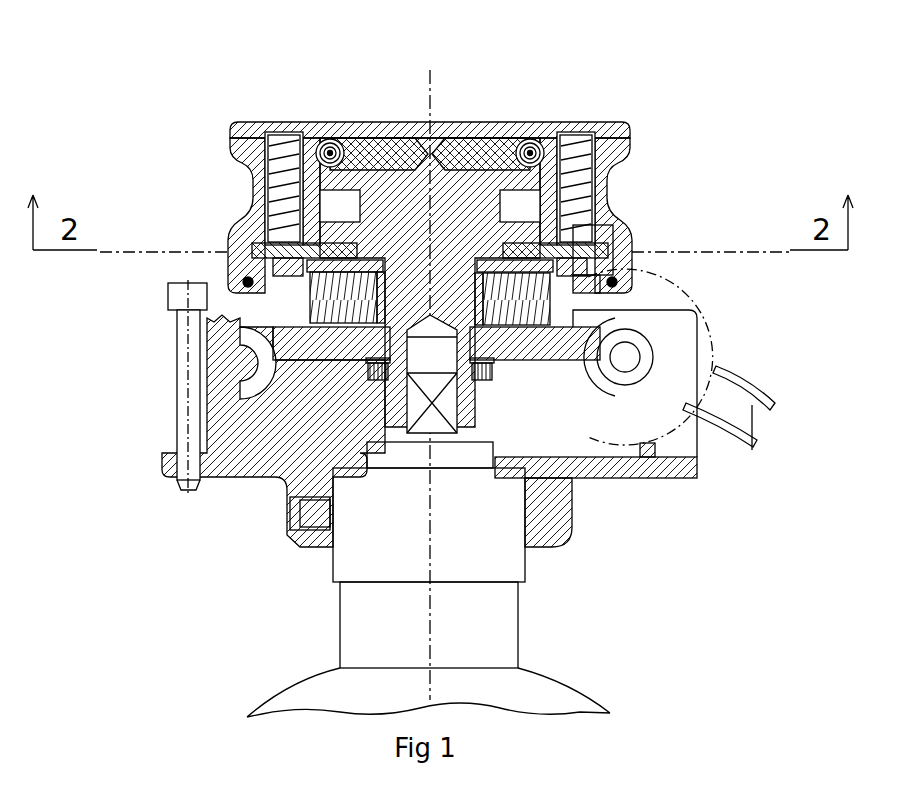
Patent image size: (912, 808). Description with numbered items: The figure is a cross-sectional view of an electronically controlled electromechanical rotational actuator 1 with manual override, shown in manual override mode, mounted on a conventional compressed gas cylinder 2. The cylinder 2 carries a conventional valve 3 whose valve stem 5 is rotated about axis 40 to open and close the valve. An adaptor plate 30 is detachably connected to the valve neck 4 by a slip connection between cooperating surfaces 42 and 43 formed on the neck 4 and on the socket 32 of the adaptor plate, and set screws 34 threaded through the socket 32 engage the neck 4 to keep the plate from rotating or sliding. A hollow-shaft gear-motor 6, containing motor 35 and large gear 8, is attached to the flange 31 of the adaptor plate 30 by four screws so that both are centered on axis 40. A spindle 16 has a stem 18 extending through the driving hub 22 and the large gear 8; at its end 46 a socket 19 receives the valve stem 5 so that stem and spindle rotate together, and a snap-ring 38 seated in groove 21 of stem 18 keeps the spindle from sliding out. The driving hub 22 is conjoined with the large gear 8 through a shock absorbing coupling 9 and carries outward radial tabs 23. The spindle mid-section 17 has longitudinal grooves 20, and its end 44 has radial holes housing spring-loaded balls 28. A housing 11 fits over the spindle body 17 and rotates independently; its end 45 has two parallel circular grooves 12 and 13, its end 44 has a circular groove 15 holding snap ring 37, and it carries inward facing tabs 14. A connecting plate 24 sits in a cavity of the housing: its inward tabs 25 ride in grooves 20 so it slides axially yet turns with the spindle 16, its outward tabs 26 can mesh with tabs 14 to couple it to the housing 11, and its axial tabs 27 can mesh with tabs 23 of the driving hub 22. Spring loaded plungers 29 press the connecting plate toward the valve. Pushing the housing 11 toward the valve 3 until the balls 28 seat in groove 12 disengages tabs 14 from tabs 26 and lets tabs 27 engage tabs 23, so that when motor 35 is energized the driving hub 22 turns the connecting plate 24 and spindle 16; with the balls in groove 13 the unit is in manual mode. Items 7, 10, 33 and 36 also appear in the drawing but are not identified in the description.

The rotational actuator 1 is at (240, 116).
The compressed gas cylinder 2 is at (285, 708).
The valve 3 is at (380, 648).
The valve neck 4 is at (510, 467).
The valve stem 5 is at (430, 425).
The hollow-shaft gear-motor 6 is at (372, 389).
The support plate 7 is at (323, 343).
The large gear 8 is at (297, 417).
The shock absorbing coupling 9 is at (345, 297).
The flange segments 10 is at (752, 400).
The housing 11 is at (257, 130).
The groove 12 is at (320, 145).
The circular groove 13 is at (540, 140).
The inward facing tabs 14 is at (567, 270).
The circular groove 15 is at (603, 270).
The spindle 16 is at (377, 132).
The spindle mid-section 17 is at (447, 217).
The spindle stem 18 is at (585, 482).
The socket 19 is at (568, 468).
The longitudinal grooves 20 is at (262, 135).
The groove 21 is at (398, 393).
The driving hub 22 is at (570, 287).
The radial tabs 23 is at (548, 265).
The connecting plate 24 is at (262, 215).
The radial inward facing tabs 25 is at (285, 168).
The outward facing radial tabs 26 is at (263, 250).
The axial tabs 27 is at (348, 250).
The spring-loaded balls 28 is at (532, 153).
The spring loaded plungers 29 is at (577, 170).
The adaptor plate 30 is at (687, 468).
The flange 31 is at (725, 432).
The socket 32 is at (547, 510).
The bolt 33 is at (181, 295).
The set screws 34 is at (313, 500).
The motor 35 is at (657, 300).
The boss 36 is at (625, 357).
The snap ring 37 is at (248, 282).
The snap-ring 38 is at (384, 378).
The axis 40 is at (432, 638).
The cooperating surface 42 is at (525, 508).
The cooperating surface 43 is at (525, 522).
The end 44 is at (408, 113).
The housing end 45 is at (613, 117).
The spindle end 46 is at (467, 432).